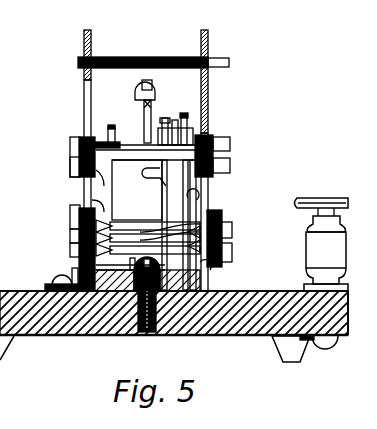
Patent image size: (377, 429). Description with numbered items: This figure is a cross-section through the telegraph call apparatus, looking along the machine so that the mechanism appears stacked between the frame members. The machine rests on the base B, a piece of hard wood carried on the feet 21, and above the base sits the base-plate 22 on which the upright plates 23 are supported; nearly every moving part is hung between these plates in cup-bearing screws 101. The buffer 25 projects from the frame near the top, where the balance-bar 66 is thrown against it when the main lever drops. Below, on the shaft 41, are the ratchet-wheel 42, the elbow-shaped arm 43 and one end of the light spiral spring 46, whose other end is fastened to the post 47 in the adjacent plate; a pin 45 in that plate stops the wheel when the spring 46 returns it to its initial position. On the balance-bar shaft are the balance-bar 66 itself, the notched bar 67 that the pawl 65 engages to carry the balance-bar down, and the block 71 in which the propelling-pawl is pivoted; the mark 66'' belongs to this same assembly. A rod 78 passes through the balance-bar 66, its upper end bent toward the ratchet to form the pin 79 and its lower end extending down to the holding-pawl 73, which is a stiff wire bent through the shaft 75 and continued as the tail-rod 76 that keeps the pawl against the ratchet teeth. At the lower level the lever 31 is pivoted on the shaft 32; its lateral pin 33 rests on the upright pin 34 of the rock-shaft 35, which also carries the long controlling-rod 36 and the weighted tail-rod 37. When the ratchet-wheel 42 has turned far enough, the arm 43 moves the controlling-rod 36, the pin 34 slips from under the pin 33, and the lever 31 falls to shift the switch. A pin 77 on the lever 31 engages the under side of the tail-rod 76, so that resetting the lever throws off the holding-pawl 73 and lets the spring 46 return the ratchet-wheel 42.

The feet 21 is at (305, 361).
The base-plate 22 is at (174, 325).
The upright plates 23 is at (83, 152).
The buffer 25 is at (230, 62).
The lever 31 is at (72, 222).
The shaft 32 is at (70, 249).
The pin 33 is at (70, 238).
The upright pin 34 is at (232, 250).
The rock-shaft 35 is at (212, 268).
The controlling-rod 36 is at (169, 225).
The tail-rod 37 is at (62, 268).
The shaft 41 is at (90, 183).
The ratchet-wheel 42 is at (209, 131).
The arm 43 is at (137, 190).
The pin 45 is at (231, 148).
The spiral spring 46 is at (112, 127).
The post 47 is at (70, 150).
The pawl 65 is at (156, 84).
The balance-bar 66 is at (167, 122).
The rod 66'' is at (81, 128).
The bar 67 is at (137, 137).
The block 71 is at (177, 125).
The holding-pawl 73 is at (206, 201).
The shaft 75 is at (92, 200).
The tail-rod 76 is at (232, 230).
The pin 77 is at (170, 231).
The rod 78 is at (200, 190).
The pin 79 is at (185, 135).
The cup-bearing screws 101 is at (70, 171).
The base B is at (30, 352).